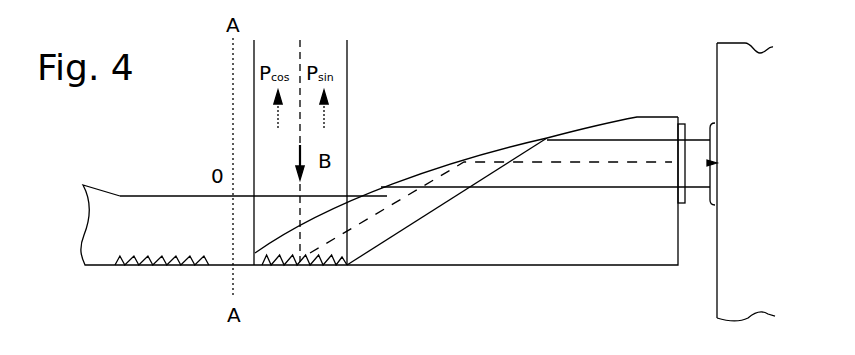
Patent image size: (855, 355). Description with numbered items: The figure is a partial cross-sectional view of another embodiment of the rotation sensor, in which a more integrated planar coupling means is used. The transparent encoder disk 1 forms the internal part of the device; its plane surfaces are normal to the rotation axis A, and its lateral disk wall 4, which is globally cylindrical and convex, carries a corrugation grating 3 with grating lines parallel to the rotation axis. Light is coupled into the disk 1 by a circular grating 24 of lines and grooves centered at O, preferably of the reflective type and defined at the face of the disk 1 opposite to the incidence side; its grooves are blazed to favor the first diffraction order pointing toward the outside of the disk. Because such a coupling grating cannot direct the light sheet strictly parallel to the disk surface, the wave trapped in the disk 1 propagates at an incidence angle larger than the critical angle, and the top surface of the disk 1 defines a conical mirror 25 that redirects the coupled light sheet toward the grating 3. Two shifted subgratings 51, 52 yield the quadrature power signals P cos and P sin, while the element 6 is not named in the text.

The transparent encoder disk 1 is at (531, 250).
The corrugation grating 3 is at (678, 155).
The disk wall 4 is at (678, 196).
The wall 6 is at (717, 77).
The circular grating 24 is at (330, 266).
The conical mirror 25 is at (457, 164).
The shifted subgrating 51 is at (713, 200).
The shifted subgrating 52 is at (710, 127).